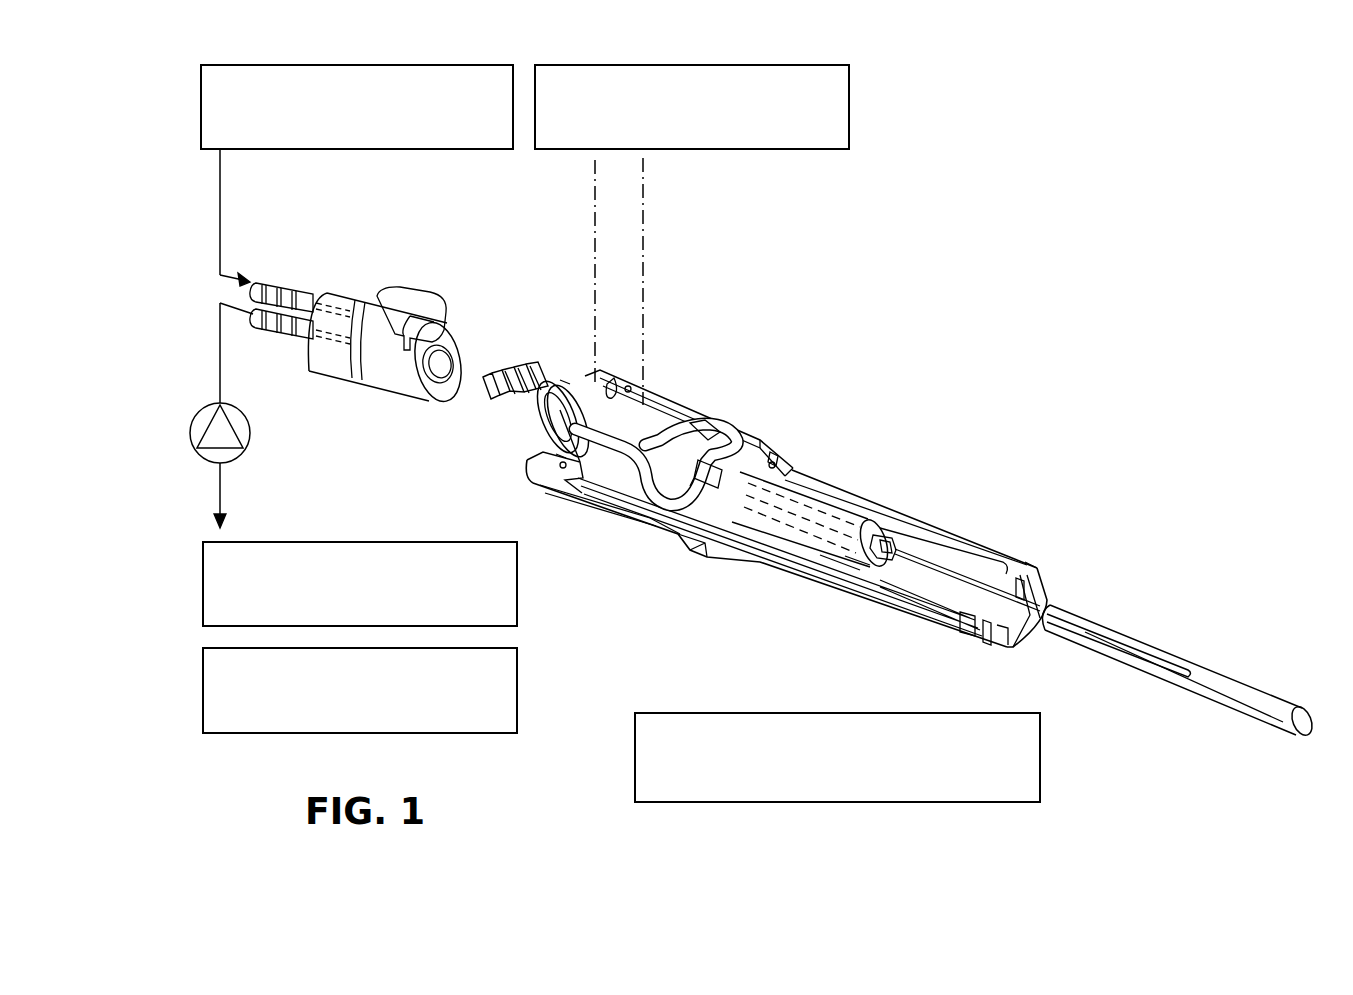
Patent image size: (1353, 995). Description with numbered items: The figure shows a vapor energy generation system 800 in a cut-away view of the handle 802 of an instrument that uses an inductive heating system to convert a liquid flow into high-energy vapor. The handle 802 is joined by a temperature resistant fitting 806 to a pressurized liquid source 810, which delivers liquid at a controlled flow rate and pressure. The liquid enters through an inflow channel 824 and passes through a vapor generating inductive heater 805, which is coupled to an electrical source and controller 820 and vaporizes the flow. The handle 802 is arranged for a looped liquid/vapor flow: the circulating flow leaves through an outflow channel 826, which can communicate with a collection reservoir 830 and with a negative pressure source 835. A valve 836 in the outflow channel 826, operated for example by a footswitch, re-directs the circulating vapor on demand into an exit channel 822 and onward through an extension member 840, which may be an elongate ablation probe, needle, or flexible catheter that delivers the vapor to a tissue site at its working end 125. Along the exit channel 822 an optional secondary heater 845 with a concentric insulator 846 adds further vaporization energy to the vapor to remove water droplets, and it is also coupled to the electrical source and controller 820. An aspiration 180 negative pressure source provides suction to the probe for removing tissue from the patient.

The vapor energy generation system 800 is at (920, 246).
The pressurized liquid source 810 is at (374, 139).
The electrical source and controller 820 is at (706, 139).
The negative pressure source 835 is at (375, 605).
The collection reservoir 830 is at (375, 706).
The aspiration 180 is at (1152, 663).
The valve 836 is at (241, 455).
The inflow channel 824 is at (281, 284).
The temperature resistant fitting 806 is at (415, 344).
The outflow channel 826 is at (331, 344).
The handle 802 is at (790, 453).
The vapor generating inductive heater 805 is at (665, 416).
The exit channel 822 is at (817, 517).
The secondary heater 845 is at (822, 556).
The concentric insulator 846 is at (850, 557).
The extension member 840 is at (1179, 693).
The working end 125 is at (1267, 722).